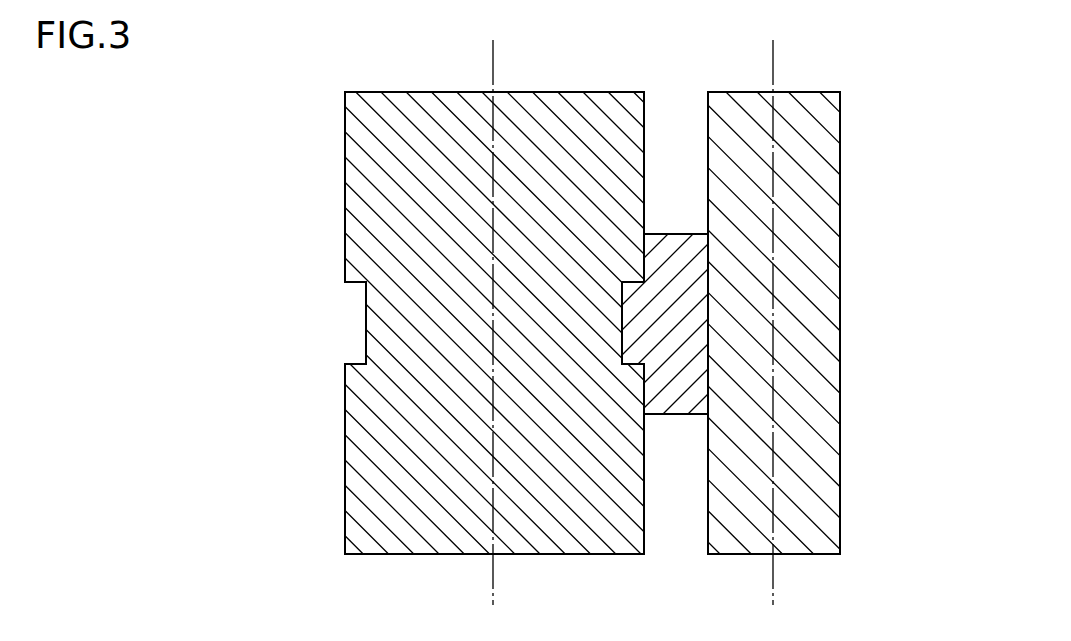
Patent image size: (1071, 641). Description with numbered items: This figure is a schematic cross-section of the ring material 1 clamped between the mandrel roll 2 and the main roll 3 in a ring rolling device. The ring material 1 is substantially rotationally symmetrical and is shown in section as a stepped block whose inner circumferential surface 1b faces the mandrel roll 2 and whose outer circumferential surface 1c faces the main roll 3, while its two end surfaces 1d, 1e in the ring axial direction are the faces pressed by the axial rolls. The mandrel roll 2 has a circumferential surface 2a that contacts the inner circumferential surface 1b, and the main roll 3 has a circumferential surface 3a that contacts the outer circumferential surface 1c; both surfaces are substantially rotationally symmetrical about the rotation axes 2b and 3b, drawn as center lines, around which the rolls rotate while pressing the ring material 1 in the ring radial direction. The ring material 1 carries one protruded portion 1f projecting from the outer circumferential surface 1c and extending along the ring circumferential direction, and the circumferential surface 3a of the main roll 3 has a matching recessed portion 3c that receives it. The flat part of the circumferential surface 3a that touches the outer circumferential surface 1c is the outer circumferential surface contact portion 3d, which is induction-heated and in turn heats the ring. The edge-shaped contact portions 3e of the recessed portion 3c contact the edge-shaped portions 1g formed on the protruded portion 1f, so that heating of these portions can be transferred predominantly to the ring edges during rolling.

The ring material 1 is at (681, 234).
The inner circumferential surface 1b is at (708, 282).
The outer circumferential surface 1c is at (644, 392).
The end surface 1d is at (660, 234).
The end surface 1e is at (673, 414).
The protruded portion 1f is at (625, 316).
The edge-shaped portions 1g is at (622, 284).
The mandrel roll 2 is at (834, 92).
The circumferential surface 2a is at (842, 153).
The rotation axis 2b is at (775, 575).
The main roll 3 is at (348, 92).
The circumferential surface 3a is at (345, 151).
The rotation axis 3b is at (492, 575).
The recessed portion 3c is at (623, 327).
The outer circumferential surface contact portion 3d is at (644, 392).
The edge-shaped contact portions 3e is at (623, 285).